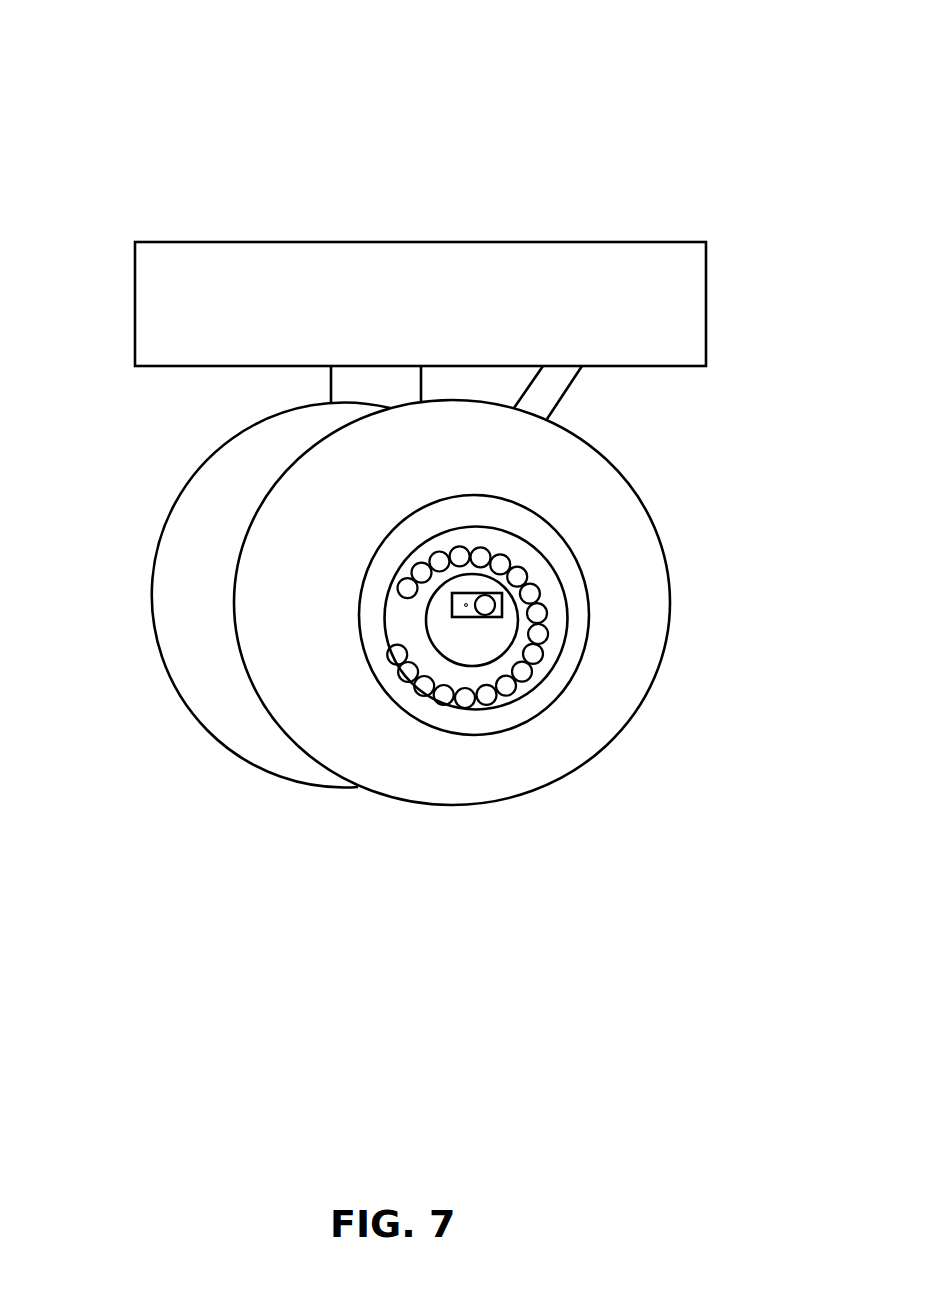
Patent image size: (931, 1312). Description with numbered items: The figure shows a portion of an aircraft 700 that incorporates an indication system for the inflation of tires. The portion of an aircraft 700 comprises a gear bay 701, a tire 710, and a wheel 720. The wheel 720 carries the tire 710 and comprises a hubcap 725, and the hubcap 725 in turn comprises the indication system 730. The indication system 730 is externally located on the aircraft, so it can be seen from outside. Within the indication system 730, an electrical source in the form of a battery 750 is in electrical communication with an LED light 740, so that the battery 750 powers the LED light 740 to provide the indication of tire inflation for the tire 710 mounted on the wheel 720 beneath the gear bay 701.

The portion of an aircraft 700 is at (690, 110).
The gear bay 701 is at (706, 302).
The tire 710 is at (443, 772).
The wheel 720 is at (549, 682).
The hubcap 725 is at (434, 653).
The indication system 730 is at (450, 608).
The LED light 740 is at (479, 603).
The battery 750 is at (468, 600).